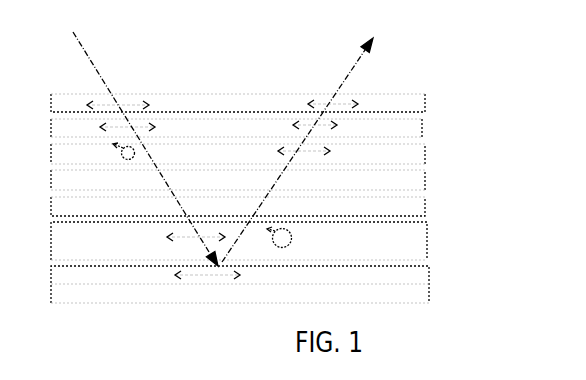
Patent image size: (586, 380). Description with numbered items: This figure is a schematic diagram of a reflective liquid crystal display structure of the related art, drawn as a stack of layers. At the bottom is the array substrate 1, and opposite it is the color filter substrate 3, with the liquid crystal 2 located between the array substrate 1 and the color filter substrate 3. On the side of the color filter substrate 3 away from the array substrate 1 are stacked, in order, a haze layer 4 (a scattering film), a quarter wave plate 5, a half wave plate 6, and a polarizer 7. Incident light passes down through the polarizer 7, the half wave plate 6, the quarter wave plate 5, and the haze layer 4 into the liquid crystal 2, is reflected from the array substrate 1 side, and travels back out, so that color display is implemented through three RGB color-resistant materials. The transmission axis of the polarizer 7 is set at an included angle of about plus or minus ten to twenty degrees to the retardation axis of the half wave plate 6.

The array substrate 1 is at (445, 287).
The liquid crystal 2 is at (443, 242).
The color filter substrate 3 is at (440, 208).
The haze layer 4 is at (440, 179).
The ¼ wave plate 5 is at (440, 151).
The ½ wave plate 6 is at (437, 128).
The polarizer 7 is at (440, 105).